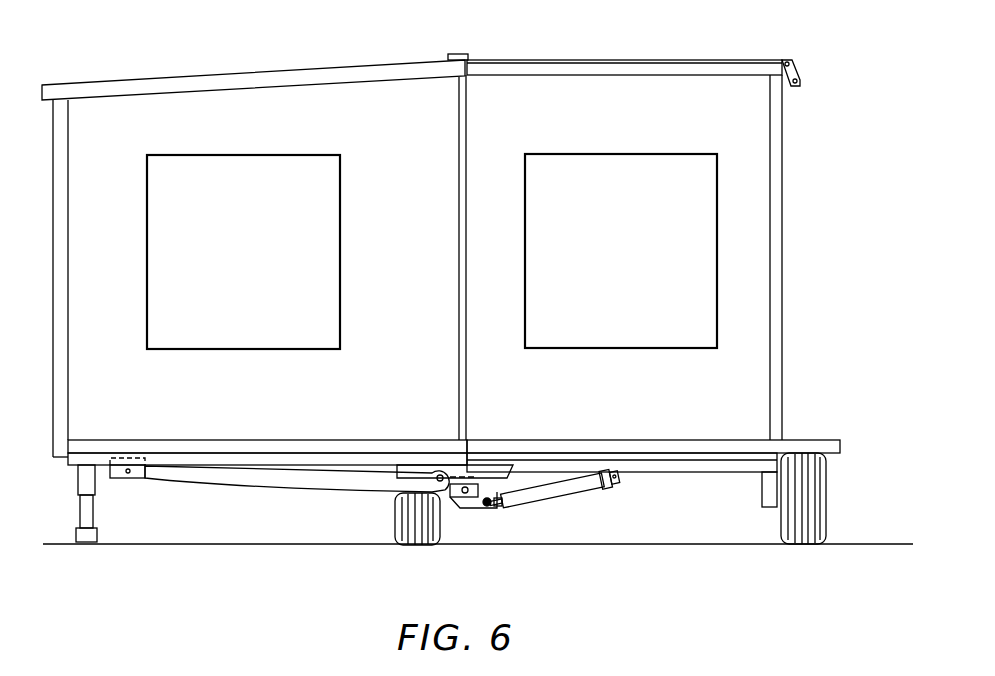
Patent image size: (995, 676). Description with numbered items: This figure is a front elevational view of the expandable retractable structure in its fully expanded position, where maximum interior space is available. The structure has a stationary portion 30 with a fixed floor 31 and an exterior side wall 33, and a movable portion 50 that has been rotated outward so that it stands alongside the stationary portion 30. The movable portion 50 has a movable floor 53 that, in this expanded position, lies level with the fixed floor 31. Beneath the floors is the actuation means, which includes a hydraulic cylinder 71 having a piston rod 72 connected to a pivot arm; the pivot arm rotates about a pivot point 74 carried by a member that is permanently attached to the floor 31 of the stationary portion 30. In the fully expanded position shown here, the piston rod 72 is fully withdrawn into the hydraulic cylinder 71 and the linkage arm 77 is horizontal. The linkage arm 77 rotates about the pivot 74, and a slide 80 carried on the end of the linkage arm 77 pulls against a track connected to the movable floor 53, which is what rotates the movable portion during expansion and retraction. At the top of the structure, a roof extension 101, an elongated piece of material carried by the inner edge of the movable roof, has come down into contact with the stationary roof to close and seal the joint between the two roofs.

The stationary portion 30 is at (633, 226).
The fixed floor 31 is at (653, 430).
The exterior side wall 33 is at (810, 257).
The movable portion 50 is at (253, 235).
The movable floor 53 is at (267, 431).
The hydraulic cylinder 71 is at (554, 501).
The piston rod 72 is at (495, 535).
The pivot point 74 is at (445, 444).
The linkage arm 77 is at (270, 478).
The slide 80 is at (135, 494).
The roof extension 101 is at (490, 36).